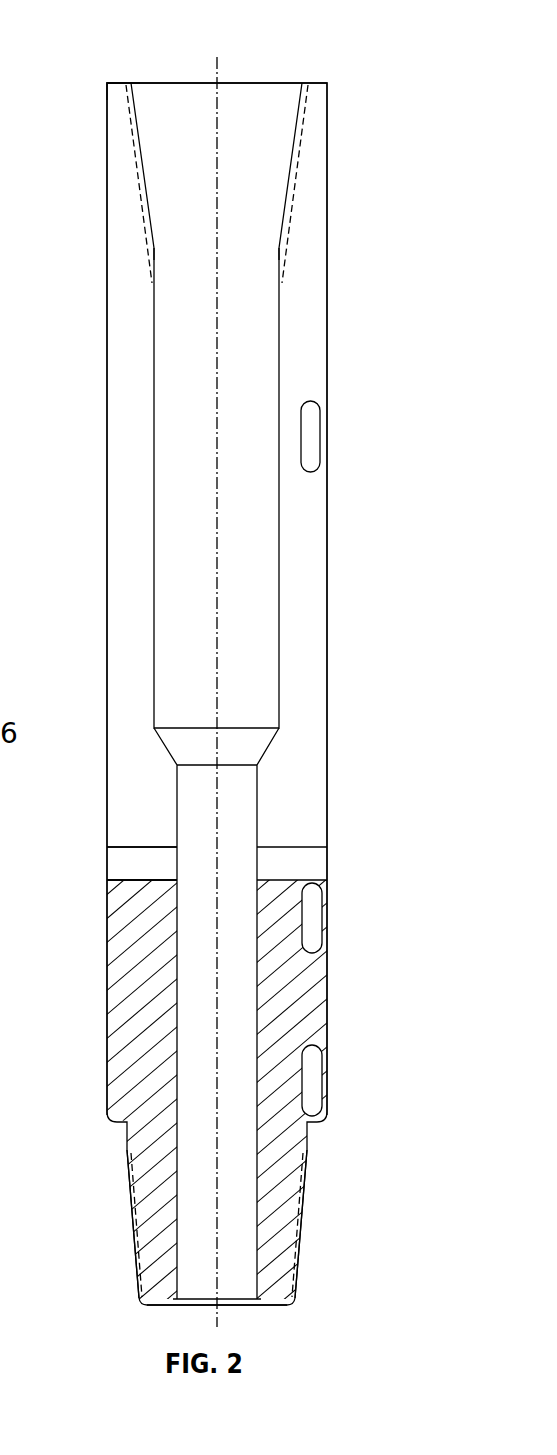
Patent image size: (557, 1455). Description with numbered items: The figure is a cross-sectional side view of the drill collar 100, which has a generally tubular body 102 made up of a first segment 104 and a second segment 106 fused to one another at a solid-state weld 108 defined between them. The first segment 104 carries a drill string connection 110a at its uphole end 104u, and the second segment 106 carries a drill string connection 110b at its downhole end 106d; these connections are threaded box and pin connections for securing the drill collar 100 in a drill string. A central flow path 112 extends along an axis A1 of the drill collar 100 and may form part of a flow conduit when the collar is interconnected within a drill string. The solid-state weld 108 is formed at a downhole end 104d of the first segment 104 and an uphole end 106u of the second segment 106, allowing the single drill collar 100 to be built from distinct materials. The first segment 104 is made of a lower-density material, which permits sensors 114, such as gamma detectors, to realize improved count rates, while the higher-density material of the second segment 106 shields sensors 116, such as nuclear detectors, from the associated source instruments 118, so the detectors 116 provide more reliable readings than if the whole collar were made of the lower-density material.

The drill collar 100 is at (331, 31).
The tubular body 102 is at (312, 176).
The first segment 104 is at (305, 782).
The uphole end of the first segment 104u is at (114, 80).
The downhole end of the first segment 104d is at (122, 853).
The second segment 106 is at (307, 990).
The uphole end of the second segment 106u is at (162, 872).
The downhole end of the second segment 106d is at (157, 1311).
The solid-state weld 108 is at (312, 866).
The drill string connection 110a is at (142, 152).
The drill string connection 110b is at (305, 1210).
The central flow path 112 is at (259, 652).
The sensors 114 is at (310, 432).
The sensors 116 is at (313, 1068).
The source instruments 118 is at (313, 928).
The axis A1 is at (217, 350).